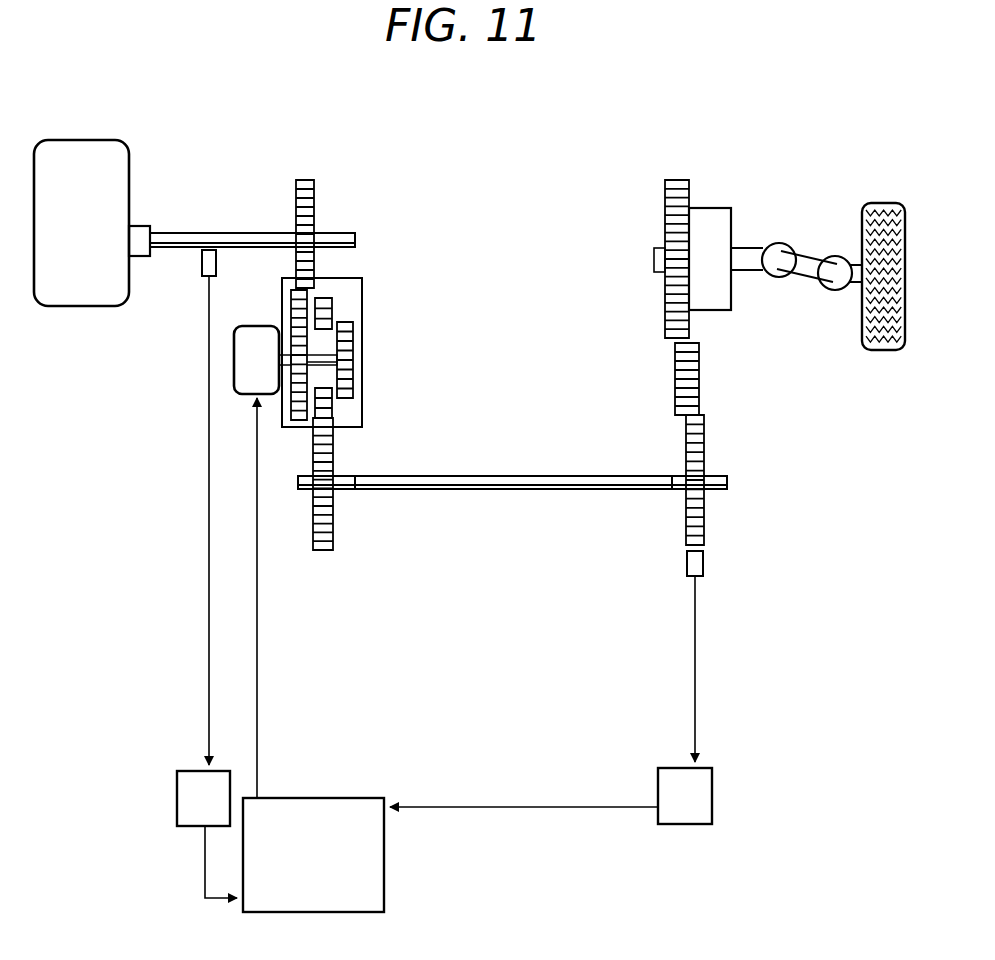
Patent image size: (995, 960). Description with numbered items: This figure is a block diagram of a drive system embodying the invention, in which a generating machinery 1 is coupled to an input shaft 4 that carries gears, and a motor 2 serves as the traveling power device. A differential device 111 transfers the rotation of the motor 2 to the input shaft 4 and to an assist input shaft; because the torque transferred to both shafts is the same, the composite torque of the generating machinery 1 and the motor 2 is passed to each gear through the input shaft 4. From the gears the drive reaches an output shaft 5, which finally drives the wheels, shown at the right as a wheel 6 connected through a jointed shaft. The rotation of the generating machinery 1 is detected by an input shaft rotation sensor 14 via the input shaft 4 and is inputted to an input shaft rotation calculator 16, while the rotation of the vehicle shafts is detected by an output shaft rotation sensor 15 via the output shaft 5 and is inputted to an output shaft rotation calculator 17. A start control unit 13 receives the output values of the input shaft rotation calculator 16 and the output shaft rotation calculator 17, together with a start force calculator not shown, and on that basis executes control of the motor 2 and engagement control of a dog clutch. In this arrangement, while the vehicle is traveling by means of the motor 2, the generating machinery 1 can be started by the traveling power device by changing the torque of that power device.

The generating machinery 1 is at (100, 140).
The input shaft 4 is at (241, 232).
The input shaft rotation sensor 14 is at (205, 276).
The motor 2 is at (234, 370).
The differential device 111 is at (362, 378).
The output shaft 5 is at (506, 491).
The wheel 6 is at (882, 350).
The output shaft rotation sensor 15 is at (703, 564).
The input shaft rotation calculator 16 is at (177, 786).
The start control unit 13 is at (384, 880).
The output shaft rotation calculator 17 is at (712, 795).